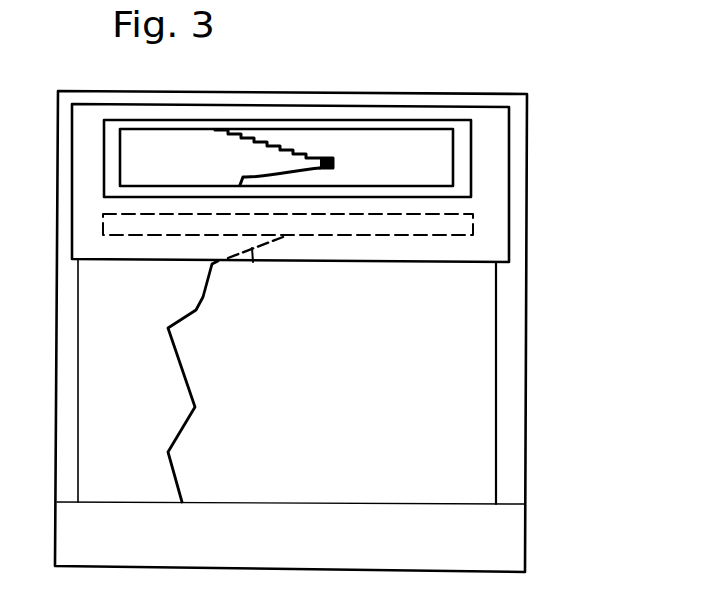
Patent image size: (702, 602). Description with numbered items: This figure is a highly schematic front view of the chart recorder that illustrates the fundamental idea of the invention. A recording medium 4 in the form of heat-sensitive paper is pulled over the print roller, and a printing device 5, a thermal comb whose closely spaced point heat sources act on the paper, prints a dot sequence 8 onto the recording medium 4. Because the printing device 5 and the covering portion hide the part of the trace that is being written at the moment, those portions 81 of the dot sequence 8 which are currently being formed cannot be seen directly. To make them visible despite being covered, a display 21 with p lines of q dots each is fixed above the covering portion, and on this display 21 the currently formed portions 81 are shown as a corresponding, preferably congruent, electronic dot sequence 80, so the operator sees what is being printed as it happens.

The recording medium 4 is at (462, 457).
The printing device 5 is at (478, 227).
The dot sequence 8 is at (190, 385).
The display 21 is at (440, 150).
The electronic dot sequence 80 is at (305, 170).
The portions of the dot sequence currently being formed 81 is at (253, 262).